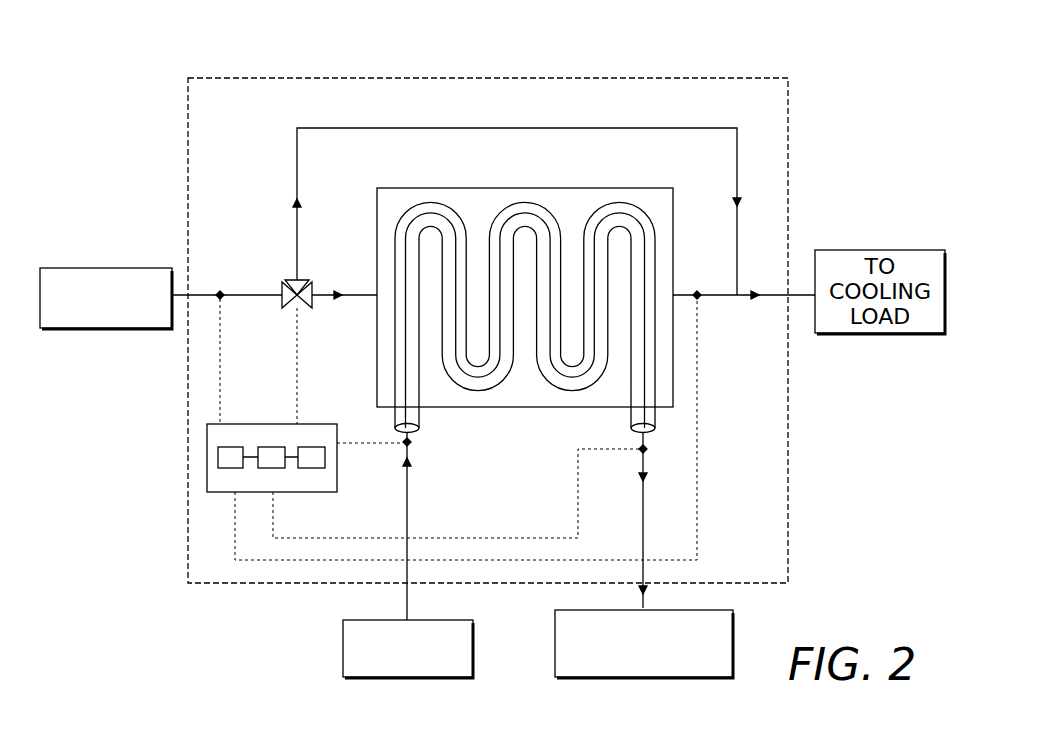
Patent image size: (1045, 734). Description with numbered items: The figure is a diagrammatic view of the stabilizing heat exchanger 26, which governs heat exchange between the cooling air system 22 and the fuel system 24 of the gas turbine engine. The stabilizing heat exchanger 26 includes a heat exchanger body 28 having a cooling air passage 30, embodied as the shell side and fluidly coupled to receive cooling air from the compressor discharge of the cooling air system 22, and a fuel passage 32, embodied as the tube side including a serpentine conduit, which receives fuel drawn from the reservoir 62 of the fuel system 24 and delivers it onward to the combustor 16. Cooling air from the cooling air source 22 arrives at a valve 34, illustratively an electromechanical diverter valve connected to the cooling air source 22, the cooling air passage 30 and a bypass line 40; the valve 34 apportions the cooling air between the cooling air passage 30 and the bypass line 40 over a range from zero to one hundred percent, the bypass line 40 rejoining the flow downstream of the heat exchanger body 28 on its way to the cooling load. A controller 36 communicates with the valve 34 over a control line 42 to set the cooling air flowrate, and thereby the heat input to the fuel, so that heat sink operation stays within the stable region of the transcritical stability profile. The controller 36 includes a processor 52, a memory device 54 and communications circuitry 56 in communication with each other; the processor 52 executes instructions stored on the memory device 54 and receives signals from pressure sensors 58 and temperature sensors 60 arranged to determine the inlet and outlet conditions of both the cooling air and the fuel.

The combustor 16 is at (750, 614).
The cooling air system 22 is at (108, 245).
The fuel system 24 is at (484, 614).
The stabilizing heat exchanger 26 is at (781, 75).
The heat exchanger body 28 is at (432, 188).
The cooling air passage 30 is at (477, 206).
The fuel passage 32 is at (531, 207).
The valve 34 is at (308, 272).
The controller 36 is at (268, 435).
The bypass line 40 is at (347, 127).
The control signal line 42 is at (306, 330).
The processor 52 is at (232, 470).
The memory device 54 is at (272, 447).
The communications circuitry 56 is at (313, 470).
The pressure sensors 58 is at (493, 396).
The temperature sensors 60 is at (222, 292).
The reservoir 62 is at (382, 620).